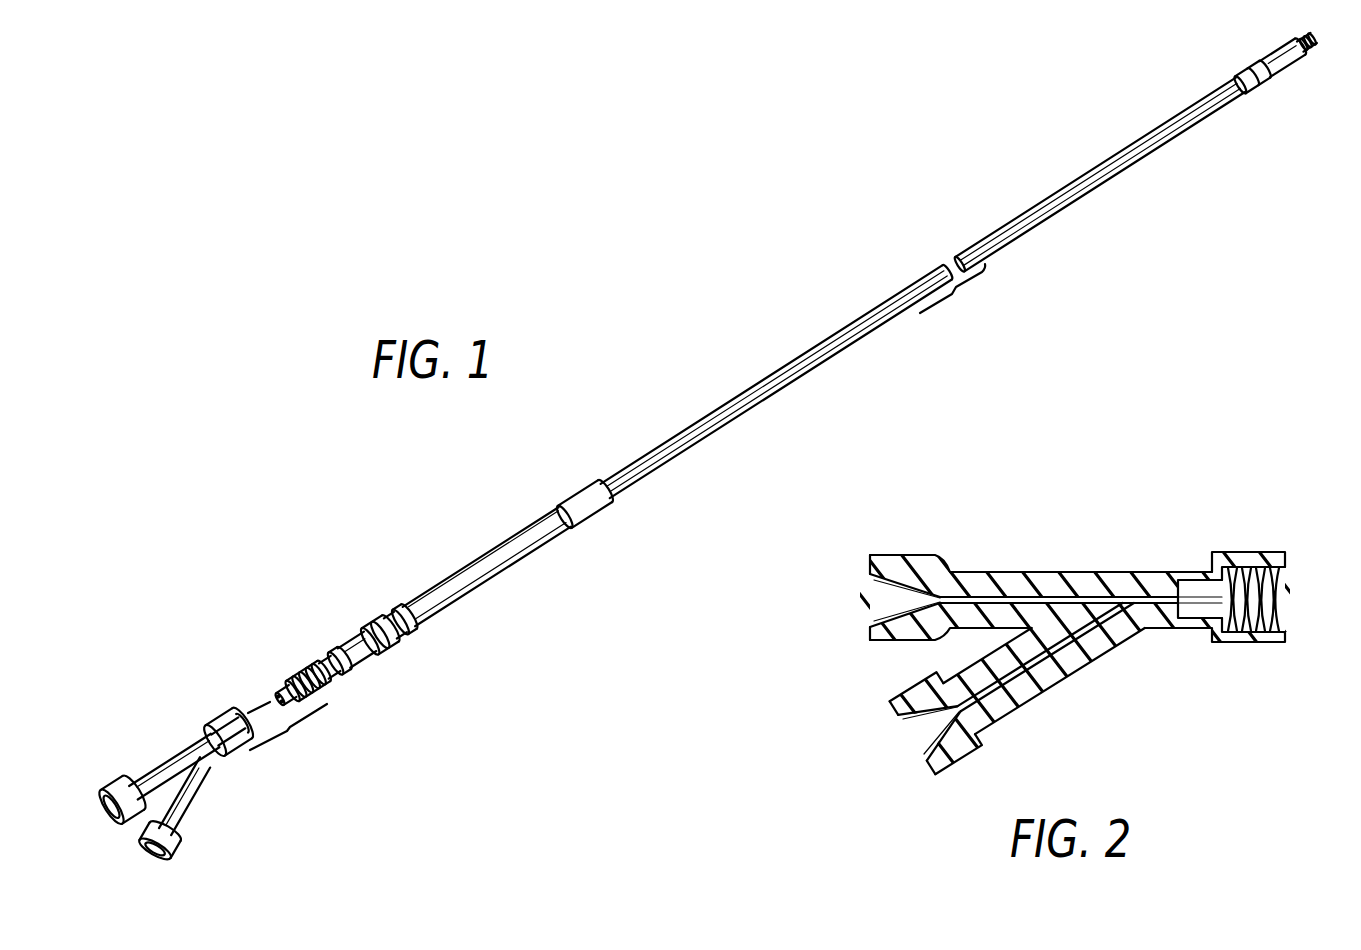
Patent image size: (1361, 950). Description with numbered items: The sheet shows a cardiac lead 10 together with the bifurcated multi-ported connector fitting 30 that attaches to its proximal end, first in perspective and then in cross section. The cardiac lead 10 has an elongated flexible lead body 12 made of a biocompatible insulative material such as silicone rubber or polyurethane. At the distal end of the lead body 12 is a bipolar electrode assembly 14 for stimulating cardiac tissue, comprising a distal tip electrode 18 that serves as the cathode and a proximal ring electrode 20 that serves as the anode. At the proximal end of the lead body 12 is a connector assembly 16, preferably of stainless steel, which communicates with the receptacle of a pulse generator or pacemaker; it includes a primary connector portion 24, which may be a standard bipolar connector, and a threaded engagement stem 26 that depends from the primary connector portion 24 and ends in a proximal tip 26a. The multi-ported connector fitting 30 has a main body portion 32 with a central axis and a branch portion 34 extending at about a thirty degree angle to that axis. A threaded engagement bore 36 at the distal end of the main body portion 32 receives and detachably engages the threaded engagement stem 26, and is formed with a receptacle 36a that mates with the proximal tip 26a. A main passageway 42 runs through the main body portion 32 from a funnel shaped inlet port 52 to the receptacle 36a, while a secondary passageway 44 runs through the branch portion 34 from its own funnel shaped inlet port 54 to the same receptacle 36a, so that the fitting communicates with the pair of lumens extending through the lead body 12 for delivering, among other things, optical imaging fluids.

In FIG. 1, the cardiac lead 10 is at (726, 453).
In FIG. 1, the lead body 12 is at (825, 351).
In FIG. 1, the bipolar electrode assembly 14 is at (1284, 93).
In FIG. 1, the connector assembly 16 is at (385, 604).
In FIG. 1, the distal tip electrode 18 is at (1327, 62).
In FIG. 1, the proximal ring electrode 20 is at (1246, 119).
In FIG. 1, the primary connector portion 24 is at (369, 669).
In FIG. 1, the threaded engagement stem 26 is at (317, 639).
In FIG. 1, the proximal tip 26a is at (254, 661).
In FIG. 1, the multi-ported connector fitting 30 is at (211, 766).
In FIG. 2, the multi-ported connector fitting 30 is at (1030, 629).
In FIG. 2, the main body portion 32 is at (1081, 531).
In FIG. 2, the branch portion 34 is at (1021, 701).
In FIG. 2, the threaded engagement bore 36 is at (1281, 598).
In FIG. 2, the receptacle 36a is at (1198, 564).
In FIG. 2, the main passageway 42 is at (1059, 550).
In FIG. 2, the secondary passageway 44 is at (1046, 685).
In FIG. 2, the funnel shaped inlet port 52 is at (876, 595).
In FIG. 2, the funnel shaped inlet port 54 is at (907, 753).